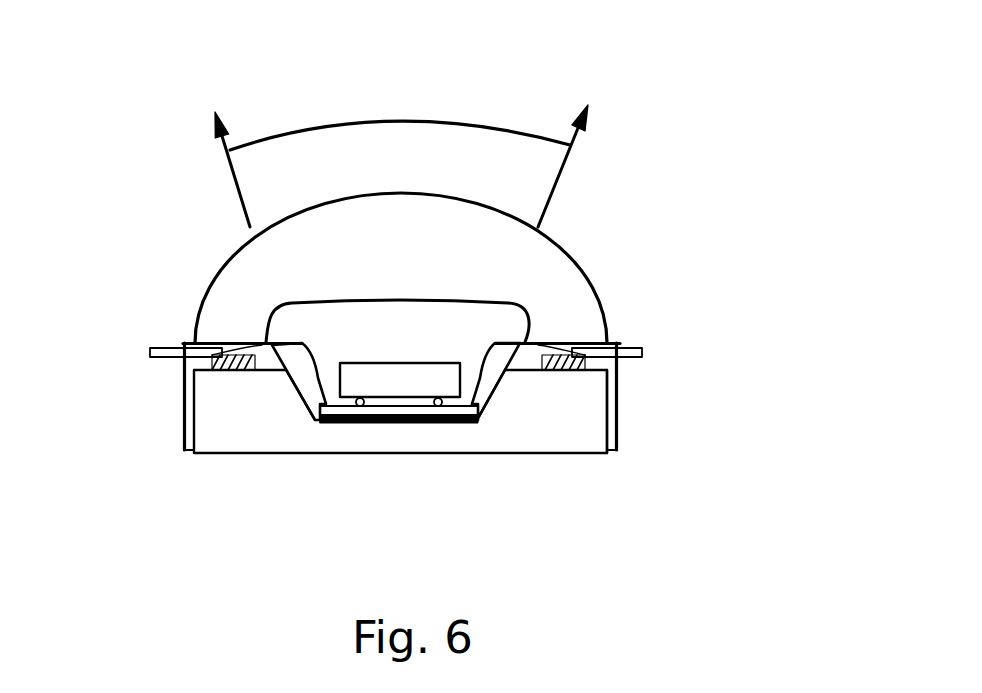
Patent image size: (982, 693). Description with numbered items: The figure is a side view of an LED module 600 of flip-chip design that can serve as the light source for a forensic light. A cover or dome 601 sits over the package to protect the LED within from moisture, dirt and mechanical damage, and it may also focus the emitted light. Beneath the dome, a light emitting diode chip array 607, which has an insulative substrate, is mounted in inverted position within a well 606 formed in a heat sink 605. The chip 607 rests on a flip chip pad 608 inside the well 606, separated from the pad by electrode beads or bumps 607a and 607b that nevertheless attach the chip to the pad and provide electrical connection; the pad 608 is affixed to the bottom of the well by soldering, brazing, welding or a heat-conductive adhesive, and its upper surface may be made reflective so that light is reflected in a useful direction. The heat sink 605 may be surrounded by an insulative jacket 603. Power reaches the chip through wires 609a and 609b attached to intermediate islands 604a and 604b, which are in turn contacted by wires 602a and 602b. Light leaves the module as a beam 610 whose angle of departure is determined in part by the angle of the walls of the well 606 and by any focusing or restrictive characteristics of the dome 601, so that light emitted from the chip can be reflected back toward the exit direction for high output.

The LED module 600 is at (689, 144).
The dome 601 is at (535, 280).
The wire 602a is at (628, 342).
The wire 602b is at (172, 356).
The insulative jacket 603 is at (610, 365).
The intermediate island 604a is at (560, 364).
The intermediate island 604b is at (214, 368).
The heat sink 605 is at (463, 423).
The well 606 is at (505, 383).
The light emitting diode chip array 607 is at (394, 380).
The electrode bump 607a is at (358, 404).
The electrode bump 607b is at (453, 420).
The flip chip pad 608 is at (403, 410).
The wire 609a is at (297, 383).
The wire 609b is at (475, 382).
The beam 610 is at (222, 178).